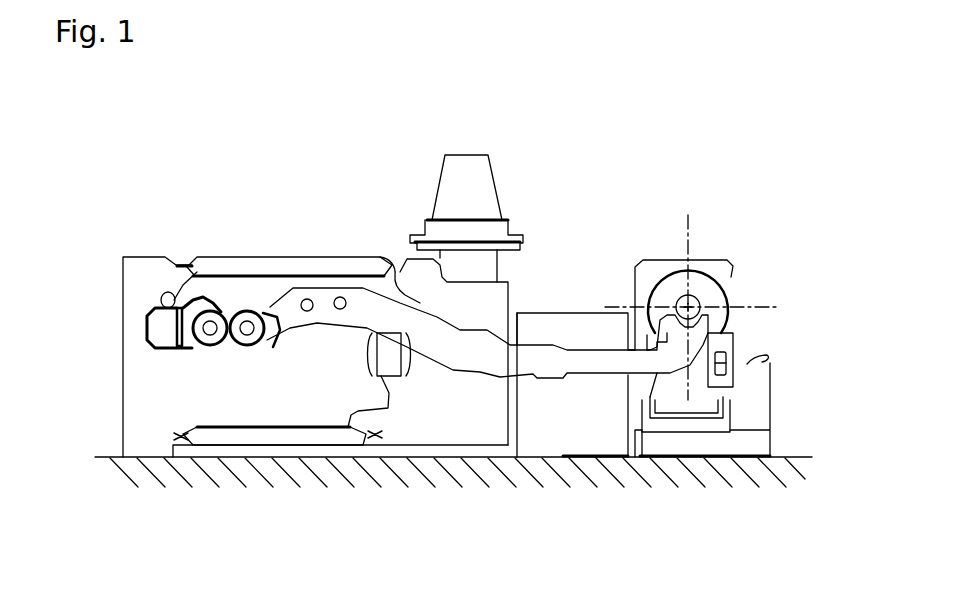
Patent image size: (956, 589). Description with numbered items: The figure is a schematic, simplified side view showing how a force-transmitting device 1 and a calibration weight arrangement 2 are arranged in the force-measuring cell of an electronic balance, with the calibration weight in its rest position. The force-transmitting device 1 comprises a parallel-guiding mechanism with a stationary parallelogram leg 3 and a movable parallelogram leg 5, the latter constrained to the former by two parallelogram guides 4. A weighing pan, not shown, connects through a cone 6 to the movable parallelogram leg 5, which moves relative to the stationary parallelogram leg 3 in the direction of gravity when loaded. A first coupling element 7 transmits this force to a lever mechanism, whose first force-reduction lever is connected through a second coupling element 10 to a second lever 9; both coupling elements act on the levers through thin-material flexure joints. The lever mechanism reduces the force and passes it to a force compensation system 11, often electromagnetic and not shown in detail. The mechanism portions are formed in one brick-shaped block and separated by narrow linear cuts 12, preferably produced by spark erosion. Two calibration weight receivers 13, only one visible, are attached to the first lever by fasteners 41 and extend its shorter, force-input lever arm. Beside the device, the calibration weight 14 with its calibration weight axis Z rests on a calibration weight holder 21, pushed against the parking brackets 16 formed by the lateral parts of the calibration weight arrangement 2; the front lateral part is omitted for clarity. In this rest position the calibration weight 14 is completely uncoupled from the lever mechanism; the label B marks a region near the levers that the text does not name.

The force-transmitting device 1 is at (146, 208).
The calibration weight arrangement 2 is at (717, 216).
The stationary parallelogram leg 3 is at (315, 357).
The parallelogram guides 4 is at (316, 267).
The movable parallelogram leg 5 is at (482, 404).
The cone 6 is at (465, 185).
The first coupling element 7 is at (420, 388).
The second lever 9 is at (266, 333).
The second coupling element 10 is at (177, 318).
The force compensation system 11 is at (588, 425).
The narrow linear cuts 12 is at (219, 272).
The calibration weight receivers 13 is at (528, 357).
The calibration weight 14 is at (720, 300).
The parking brackets 16 is at (724, 262).
The calibration weight holder 21 is at (728, 345).
The fasteners 41 is at (344, 302).
The bearing B is at (255, 308).
The calibration weight axis Z is at (698, 301).